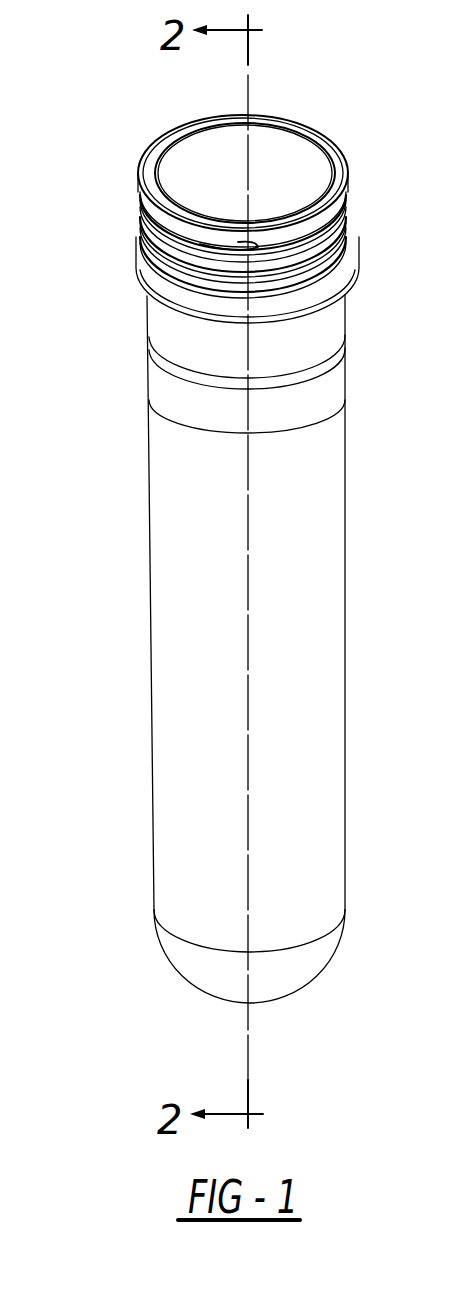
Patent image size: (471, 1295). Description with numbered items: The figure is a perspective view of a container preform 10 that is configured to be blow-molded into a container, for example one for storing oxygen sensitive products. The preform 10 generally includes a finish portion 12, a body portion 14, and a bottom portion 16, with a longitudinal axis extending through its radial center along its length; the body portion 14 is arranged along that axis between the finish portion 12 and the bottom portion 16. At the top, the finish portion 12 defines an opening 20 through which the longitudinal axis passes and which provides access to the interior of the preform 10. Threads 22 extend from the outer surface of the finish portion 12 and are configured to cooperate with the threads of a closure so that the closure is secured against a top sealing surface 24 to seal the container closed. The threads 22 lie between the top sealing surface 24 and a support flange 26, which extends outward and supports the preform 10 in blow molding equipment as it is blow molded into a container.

The preform 10 is at (131, 78).
The finish portion 12 is at (325, 214).
The body portion 14 is at (182, 625).
The bottom portion 16 is at (210, 963).
The opening 20 is at (282, 162).
The threads 22 is at (140, 185).
The top sealing surface 24 is at (172, 140).
The support flange 26 is at (143, 272).